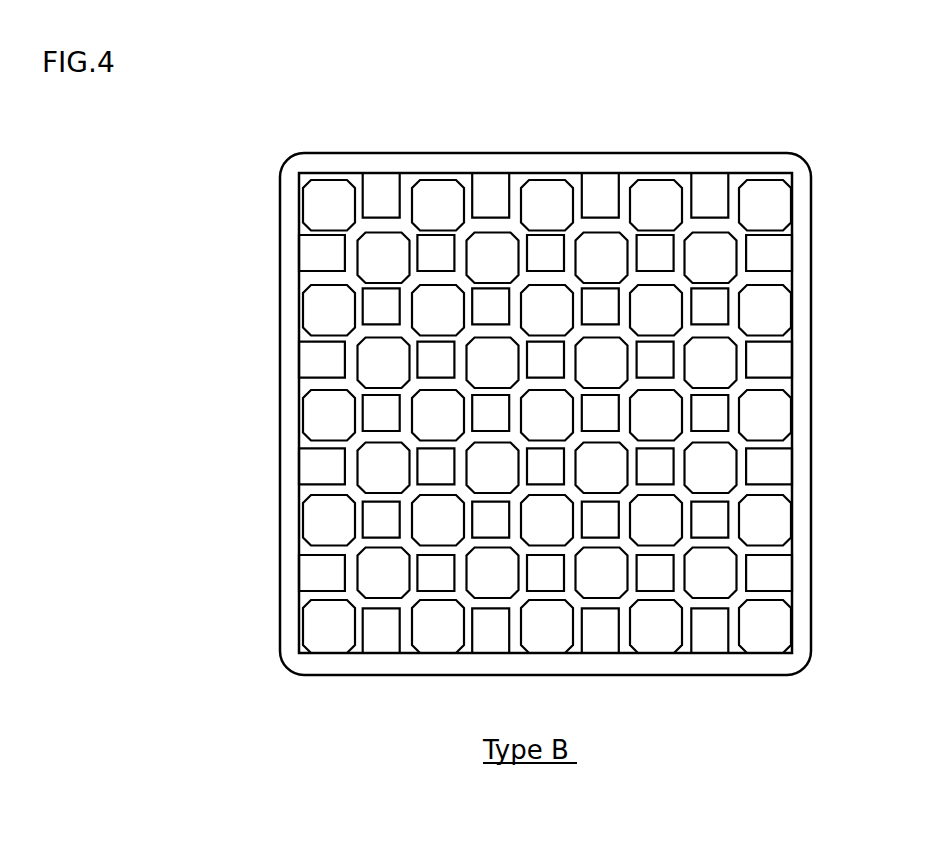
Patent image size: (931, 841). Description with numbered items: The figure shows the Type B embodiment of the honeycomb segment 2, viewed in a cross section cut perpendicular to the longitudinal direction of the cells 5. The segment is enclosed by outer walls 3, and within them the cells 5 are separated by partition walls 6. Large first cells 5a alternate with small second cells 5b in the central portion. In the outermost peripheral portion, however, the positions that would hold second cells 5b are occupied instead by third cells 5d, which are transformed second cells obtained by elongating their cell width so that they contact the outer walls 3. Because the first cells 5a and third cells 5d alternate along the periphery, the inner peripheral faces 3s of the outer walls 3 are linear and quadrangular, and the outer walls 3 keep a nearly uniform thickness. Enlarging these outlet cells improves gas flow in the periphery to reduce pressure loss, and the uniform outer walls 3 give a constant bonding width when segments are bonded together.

The honeycomb segment 2 is at (748, 127).
The outer wall 3 is at (292, 240).
The inner peripheral face 3s is at (313, 307).
The cell 5 is at (157, 380).
The first cell 5a is at (378, 360).
The second cell 5b is at (385, 413).
The third cell 5d is at (323, 472).
The partition wall 6 is at (327, 232).